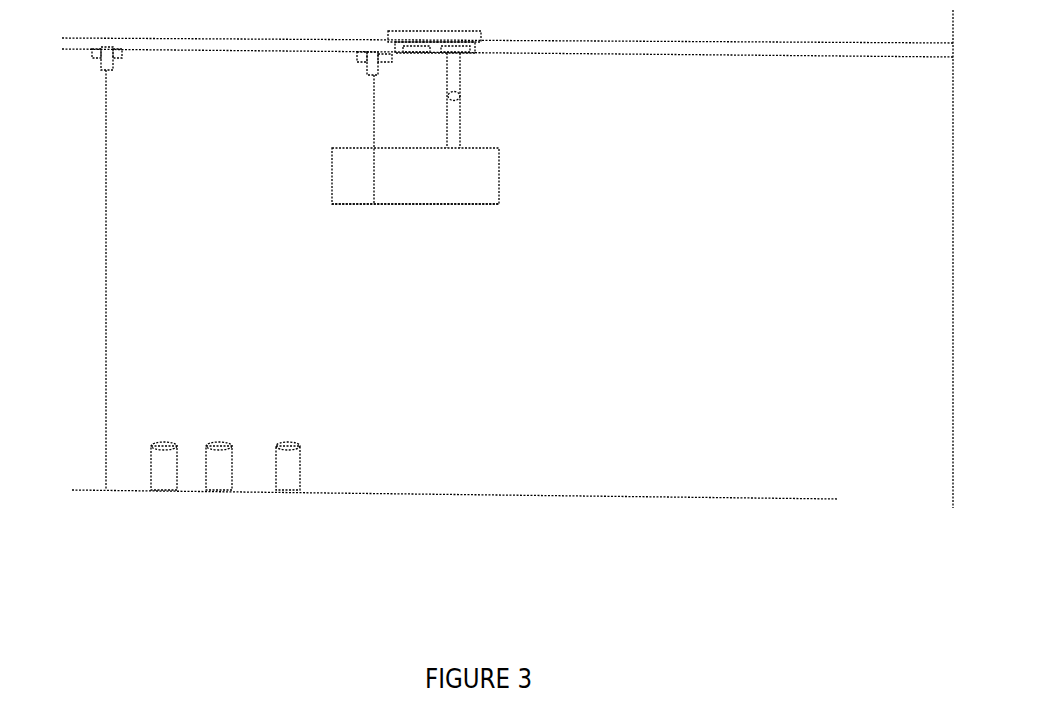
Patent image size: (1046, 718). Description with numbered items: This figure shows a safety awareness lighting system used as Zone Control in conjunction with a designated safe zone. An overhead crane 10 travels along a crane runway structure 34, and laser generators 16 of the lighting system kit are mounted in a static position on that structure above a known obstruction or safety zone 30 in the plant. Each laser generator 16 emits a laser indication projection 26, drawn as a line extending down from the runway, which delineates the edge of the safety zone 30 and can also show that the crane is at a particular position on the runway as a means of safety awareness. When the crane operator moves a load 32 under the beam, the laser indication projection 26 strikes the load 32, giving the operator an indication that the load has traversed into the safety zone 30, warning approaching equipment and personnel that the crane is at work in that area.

The overhead crane 10 is at (485, 50).
The laser generator 16 is at (115, 70).
The laser indication projection 26 is at (104, 275).
The safety zone 30 is at (366, 182).
The load 32 is at (458, 210).
The crane runway structure 34 is at (632, 66).